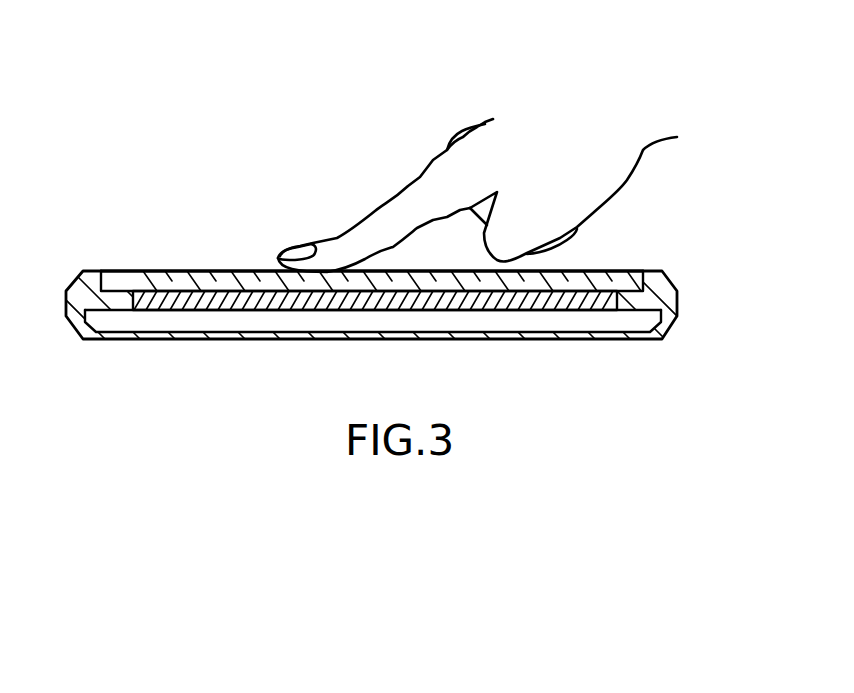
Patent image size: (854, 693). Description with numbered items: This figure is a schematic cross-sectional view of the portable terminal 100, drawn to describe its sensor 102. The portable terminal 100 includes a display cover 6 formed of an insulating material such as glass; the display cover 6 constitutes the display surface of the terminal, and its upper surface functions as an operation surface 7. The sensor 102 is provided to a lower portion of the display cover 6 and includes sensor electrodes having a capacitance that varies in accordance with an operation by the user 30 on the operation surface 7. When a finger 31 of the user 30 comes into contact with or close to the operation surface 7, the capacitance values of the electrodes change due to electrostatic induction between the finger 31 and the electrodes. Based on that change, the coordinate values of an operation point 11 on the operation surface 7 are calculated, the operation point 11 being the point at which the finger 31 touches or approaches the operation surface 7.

The portable terminal 100 is at (387, 92).
The display cover 6 is at (148, 270).
The operation surface 7 is at (190, 270).
The operation point 11 is at (278, 270).
The sensor 102 is at (543, 311).
The user 30 is at (558, 138).
The finger 31 is at (322, 250).